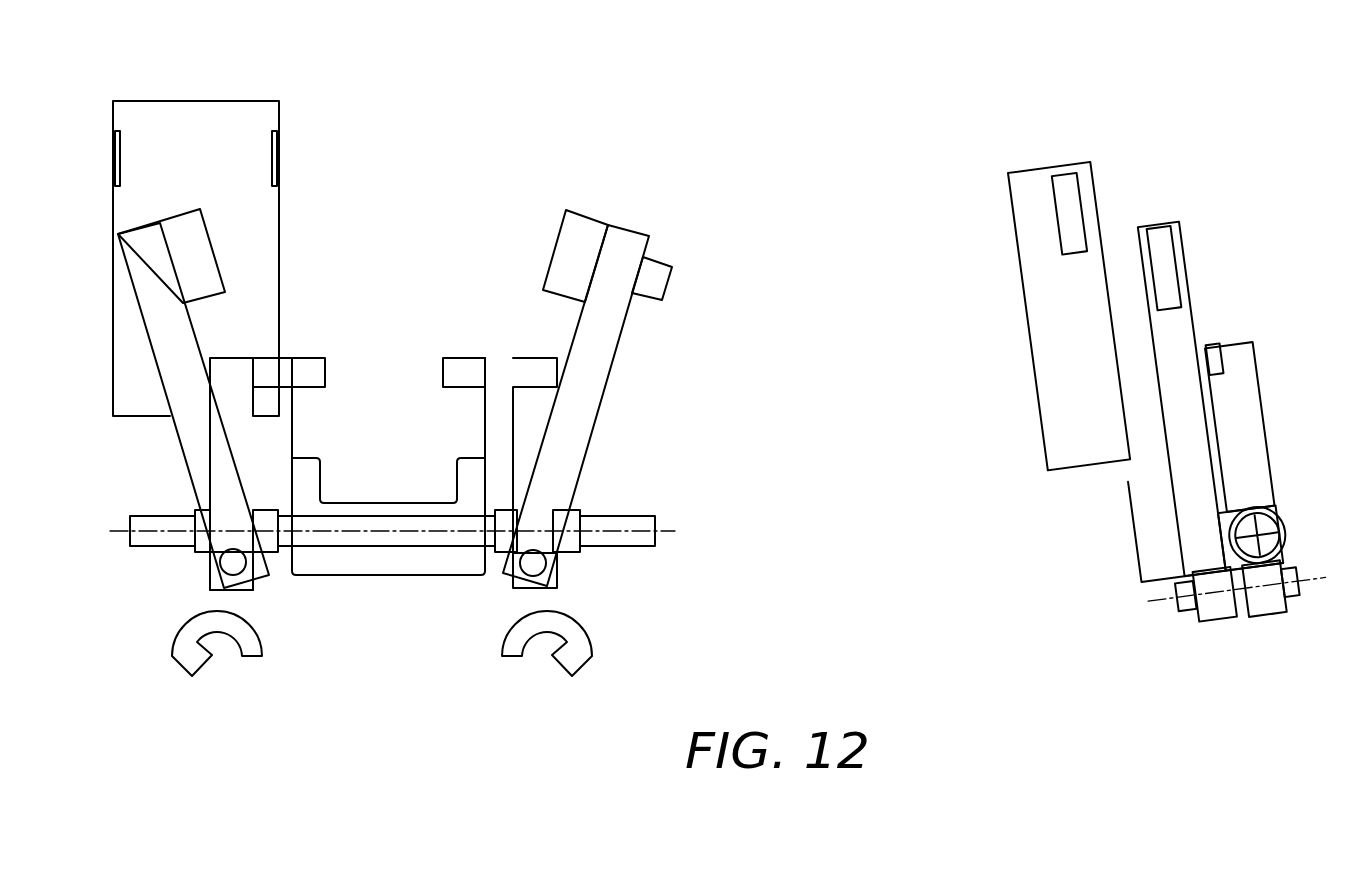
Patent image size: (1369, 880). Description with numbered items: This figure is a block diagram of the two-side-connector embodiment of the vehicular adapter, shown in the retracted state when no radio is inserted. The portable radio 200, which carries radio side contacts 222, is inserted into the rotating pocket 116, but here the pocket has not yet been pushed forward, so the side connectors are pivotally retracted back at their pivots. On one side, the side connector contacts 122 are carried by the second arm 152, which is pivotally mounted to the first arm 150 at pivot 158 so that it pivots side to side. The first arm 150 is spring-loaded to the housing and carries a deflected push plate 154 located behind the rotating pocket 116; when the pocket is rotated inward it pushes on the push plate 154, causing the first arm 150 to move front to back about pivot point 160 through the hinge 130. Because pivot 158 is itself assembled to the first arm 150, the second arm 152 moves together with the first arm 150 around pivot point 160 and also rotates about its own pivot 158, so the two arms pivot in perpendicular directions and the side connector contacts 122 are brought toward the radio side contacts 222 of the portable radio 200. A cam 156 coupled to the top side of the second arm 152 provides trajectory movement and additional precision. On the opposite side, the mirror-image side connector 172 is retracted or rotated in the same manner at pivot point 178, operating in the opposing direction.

The rotating pocket 116 is at (391, 577).
The side connector contacts 122 is at (553, 250).
The hinge 130 is at (1283, 544).
The first arm 150 is at (531, 362).
The second arm 152 is at (618, 347).
The deflected push plate 154 is at (445, 373).
The cam 156 is at (670, 284).
The pivot 158 is at (504, 573).
The pivot point 160 is at (615, 549).
The side connector 172 is at (195, 242).
The pivot point 178 is at (224, 566).
The portable radio 200 is at (196, 100).
The radio side contacts 222 is at (280, 156).